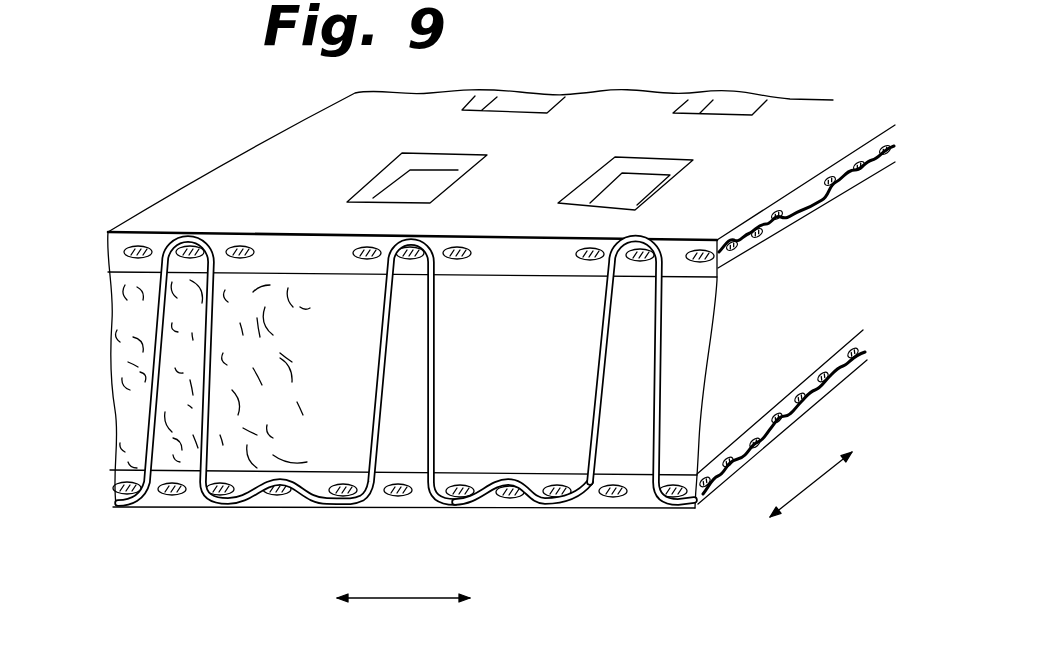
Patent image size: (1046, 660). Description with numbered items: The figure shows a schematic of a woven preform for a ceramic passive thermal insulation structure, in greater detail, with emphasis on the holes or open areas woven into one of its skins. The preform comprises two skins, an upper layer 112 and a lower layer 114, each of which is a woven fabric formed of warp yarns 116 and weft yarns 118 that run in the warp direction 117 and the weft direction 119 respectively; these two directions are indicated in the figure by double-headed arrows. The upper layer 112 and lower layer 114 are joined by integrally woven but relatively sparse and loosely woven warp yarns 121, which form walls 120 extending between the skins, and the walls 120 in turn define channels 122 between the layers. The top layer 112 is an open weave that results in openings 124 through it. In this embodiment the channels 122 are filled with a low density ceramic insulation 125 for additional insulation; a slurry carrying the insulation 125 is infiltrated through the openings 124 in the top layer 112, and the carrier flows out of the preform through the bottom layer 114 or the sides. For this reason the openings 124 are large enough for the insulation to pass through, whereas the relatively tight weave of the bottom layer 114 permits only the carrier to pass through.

The upper layer 112 is at (109, 230).
The lower layer 114 is at (116, 498).
The warp yarns 116 is at (531, 501).
The warp direction 117 is at (395, 598).
The weft yarns 118 is at (167, 497).
The weft direction 119 is at (797, 497).
The walls 120 is at (150, 406).
The warp yarns 121 is at (160, 315).
The channels 122 is at (258, 444).
The openings 124 is at (392, 176).
The low density ceramic insulation 125 is at (560, 447).